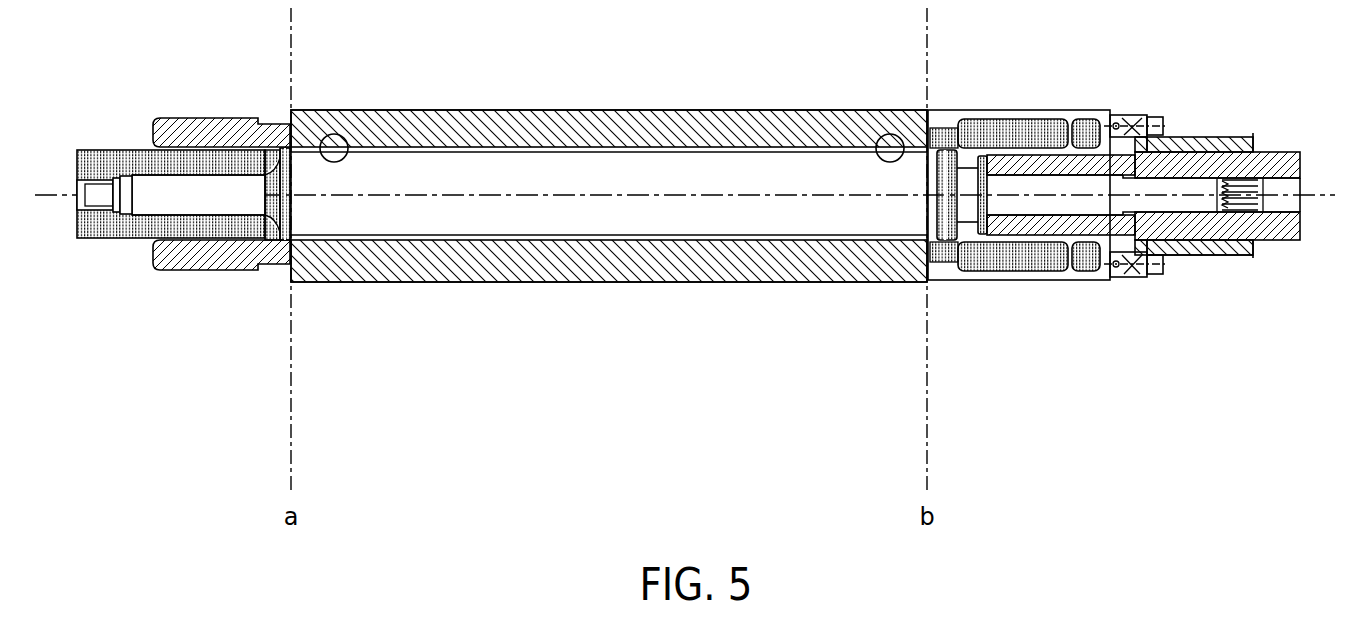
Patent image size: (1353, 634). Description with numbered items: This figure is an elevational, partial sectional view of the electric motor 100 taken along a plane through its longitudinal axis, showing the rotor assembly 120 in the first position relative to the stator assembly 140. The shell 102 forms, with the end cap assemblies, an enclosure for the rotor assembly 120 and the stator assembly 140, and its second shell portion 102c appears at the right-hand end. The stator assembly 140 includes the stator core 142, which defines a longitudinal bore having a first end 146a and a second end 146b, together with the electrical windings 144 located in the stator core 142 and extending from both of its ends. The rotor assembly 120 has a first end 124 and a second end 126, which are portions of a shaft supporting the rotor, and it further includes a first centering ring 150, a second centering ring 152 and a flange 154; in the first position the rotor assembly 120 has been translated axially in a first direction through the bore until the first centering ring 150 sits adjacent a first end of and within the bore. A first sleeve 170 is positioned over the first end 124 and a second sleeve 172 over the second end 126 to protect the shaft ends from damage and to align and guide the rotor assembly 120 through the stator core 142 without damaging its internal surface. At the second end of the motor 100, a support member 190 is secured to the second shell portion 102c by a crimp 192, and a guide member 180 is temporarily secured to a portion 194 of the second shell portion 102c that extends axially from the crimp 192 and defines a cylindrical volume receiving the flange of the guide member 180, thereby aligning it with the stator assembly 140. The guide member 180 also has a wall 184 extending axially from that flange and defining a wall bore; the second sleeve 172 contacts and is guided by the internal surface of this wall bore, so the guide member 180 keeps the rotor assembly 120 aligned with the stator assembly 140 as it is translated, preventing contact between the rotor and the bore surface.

The electric motor 100 is at (548, 87).
The shell 102 is at (766, 107).
The second shell portion 102c is at (1030, 108).
The rotor assembly 120 is at (650, 176).
The first end 124 is at (173, 202).
The second end 126 is at (1023, 202).
The stator assembly 140 is at (437, 109).
The stator core 142 is at (712, 109).
The electrical windings 144 is at (193, 125).
The first end 146a is at (343, 109).
The second end 146b is at (877, 152).
The first centering ring 150 is at (292, 215).
The second centering ring 152 is at (942, 228).
The flange 154 is at (979, 232).
The first sleeve 170 is at (110, 150).
The second sleeve 172 is at (1272, 152).
The guide member 180 is at (1198, 136).
The wall 184 is at (1198, 254).
The support member 190 is at (1120, 142).
The crimp 192 is at (1120, 279).
The portion 194 is at (1136, 280).